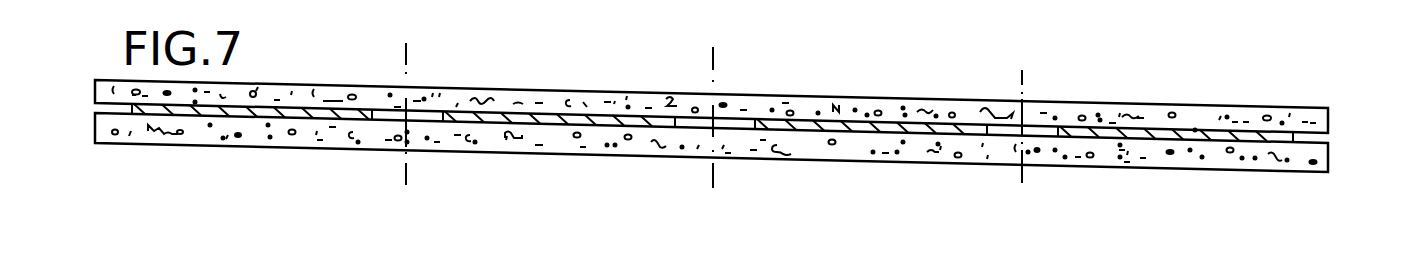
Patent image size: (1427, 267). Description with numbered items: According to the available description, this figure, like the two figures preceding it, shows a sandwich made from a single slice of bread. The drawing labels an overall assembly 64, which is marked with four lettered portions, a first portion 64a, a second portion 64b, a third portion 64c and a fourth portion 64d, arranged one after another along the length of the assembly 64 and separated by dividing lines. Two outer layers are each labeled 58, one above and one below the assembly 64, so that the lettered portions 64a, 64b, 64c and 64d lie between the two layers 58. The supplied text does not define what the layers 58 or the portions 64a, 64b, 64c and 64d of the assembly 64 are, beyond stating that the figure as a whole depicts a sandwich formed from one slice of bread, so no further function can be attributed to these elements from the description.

The metal strip 58 is at (966, 103).
The laminated strip assembly 64 is at (748, 144).
The first section of laminate 64a is at (228, 147).
The second section of laminate 64b is at (557, 152).
The third section of laminate 64c is at (874, 160).
The fourth section of laminate 64d is at (1158, 167).